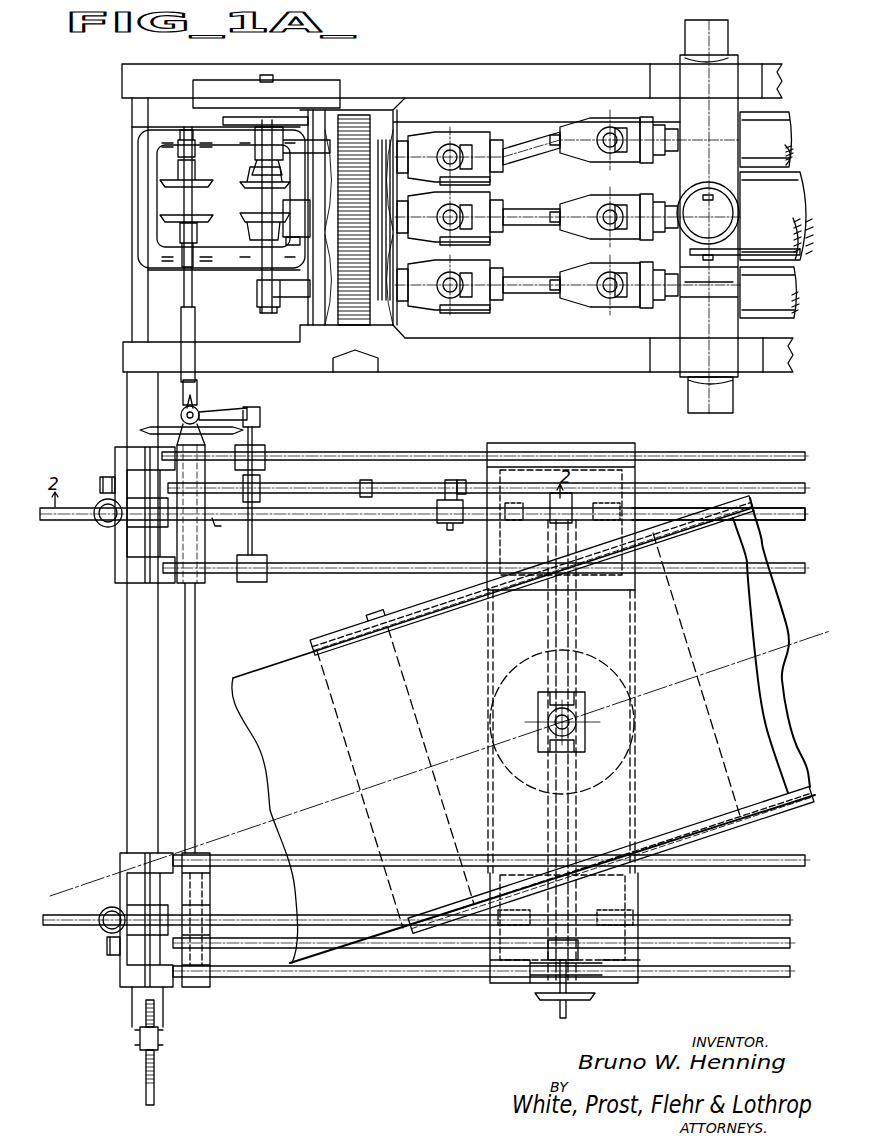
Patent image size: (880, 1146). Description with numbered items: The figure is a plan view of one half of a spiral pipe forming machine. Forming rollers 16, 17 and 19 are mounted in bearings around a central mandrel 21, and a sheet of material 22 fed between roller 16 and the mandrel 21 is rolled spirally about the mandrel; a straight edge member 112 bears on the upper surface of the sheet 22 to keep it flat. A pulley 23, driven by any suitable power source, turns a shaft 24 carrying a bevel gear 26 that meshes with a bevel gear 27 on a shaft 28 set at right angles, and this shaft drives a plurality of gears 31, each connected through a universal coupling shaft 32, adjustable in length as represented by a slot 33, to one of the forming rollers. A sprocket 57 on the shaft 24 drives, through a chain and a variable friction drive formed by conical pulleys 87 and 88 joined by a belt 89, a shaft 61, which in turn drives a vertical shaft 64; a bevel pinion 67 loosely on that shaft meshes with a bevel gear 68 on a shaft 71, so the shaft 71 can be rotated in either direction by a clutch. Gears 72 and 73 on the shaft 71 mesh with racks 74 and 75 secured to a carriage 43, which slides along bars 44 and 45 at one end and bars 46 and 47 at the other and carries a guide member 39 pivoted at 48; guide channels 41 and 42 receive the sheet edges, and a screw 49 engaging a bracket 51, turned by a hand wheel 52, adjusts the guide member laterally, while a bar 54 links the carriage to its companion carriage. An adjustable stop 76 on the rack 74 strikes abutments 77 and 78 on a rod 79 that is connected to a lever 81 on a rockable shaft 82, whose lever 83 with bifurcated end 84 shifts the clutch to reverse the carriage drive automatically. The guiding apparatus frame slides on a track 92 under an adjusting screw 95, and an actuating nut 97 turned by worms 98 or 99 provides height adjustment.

The forming roller 16 is at (748, 190).
The forming roller 17 is at (783, 114).
The forming roller 19 is at (790, 318).
The central mandrel 21 is at (800, 171).
The sheet of material 22 is at (275, 763).
The pulley 23 is at (215, 83).
The shaft 24 is at (270, 77).
The bevel gear 26 is at (257, 173).
The bevel gear 27 is at (283, 233).
The shaft 28 is at (294, 245).
The gears 31 is at (395, 126).
The universal coupling shaft 32 is at (527, 142).
The slot 33 is at (553, 136).
The guide member 39 is at (358, 765).
The guide channel 41 is at (392, 612).
The guide channel 42 is at (676, 838).
The carriage 43 is at (636, 767).
The track or bar 44 is at (310, 457).
The track or bar 45 is at (344, 563).
The bar 46 is at (247, 860).
The bar 47 is at (434, 971).
The pivot 48 is at (628, 720).
The screw or worm 49 is at (575, 600).
The bracket 51 is at (538, 712).
The hand wheel 52 is at (594, 998).
The bar 54 is at (780, 521).
The sprocket 57 is at (223, 121).
The shaft 61 is at (195, 293).
The vertical shaft 64 is at (184, 408).
The bevel pinion 67 is at (181, 414).
The bevel gear 68 is at (140, 429).
The shaft 71 is at (200, 602).
The gear 72 is at (223, 534).
The gear 73 is at (220, 913).
The rack 74 is at (320, 521).
The rack 75 is at (258, 916).
The adjustable stop 76 is at (445, 495).
The adjustable abutment 77 is at (461, 480).
The adjustable abutment 78 is at (367, 481).
The rod 79 is at (331, 486).
The lever 81 is at (264, 476).
The rockable shaft 82 is at (257, 538).
The lever 83 is at (236, 408).
The bifurcated end 84 is at (198, 408).
The conical pulley 87 is at (255, 215).
The conical pulley 88 is at (170, 217).
The belt 89 is at (218, 181).
The track 92 is at (130, 602).
The adjusting screw 95 is at (156, 1066).
The actuating nut 97 is at (98, 523).
The worm 98 is at (100, 478).
The worm 99 is at (106, 950).
The straight edge member 112 is at (690, 252).